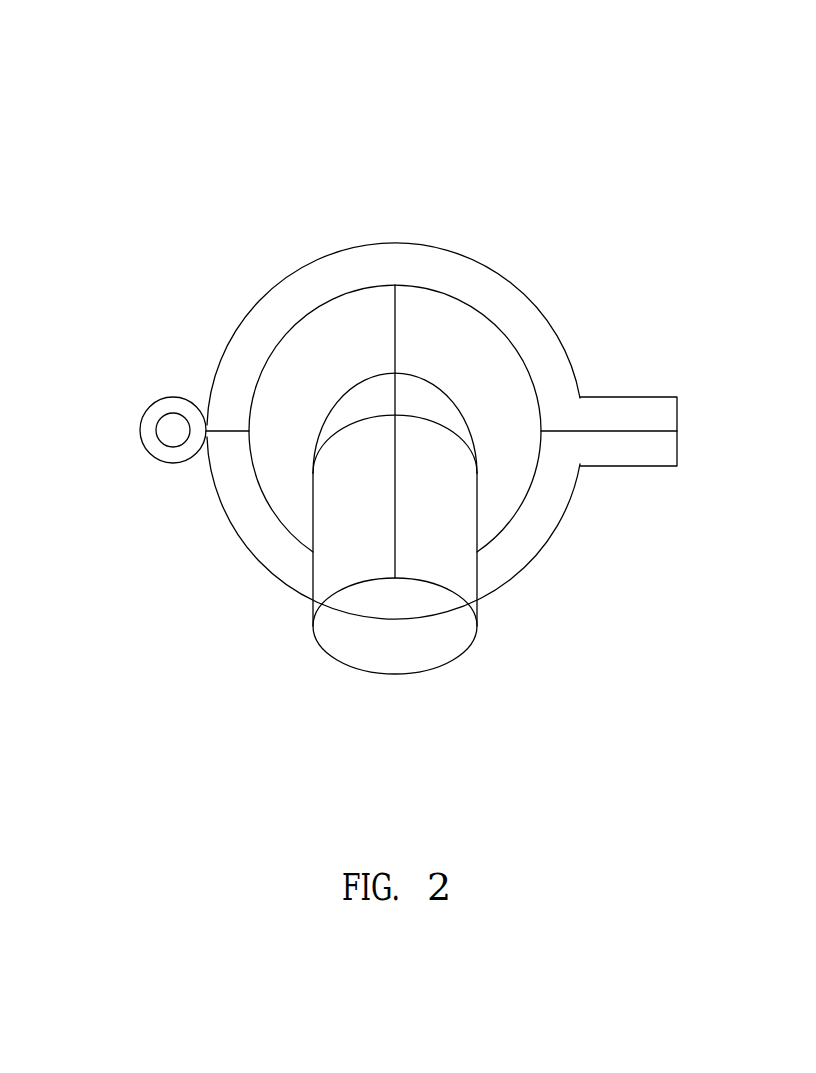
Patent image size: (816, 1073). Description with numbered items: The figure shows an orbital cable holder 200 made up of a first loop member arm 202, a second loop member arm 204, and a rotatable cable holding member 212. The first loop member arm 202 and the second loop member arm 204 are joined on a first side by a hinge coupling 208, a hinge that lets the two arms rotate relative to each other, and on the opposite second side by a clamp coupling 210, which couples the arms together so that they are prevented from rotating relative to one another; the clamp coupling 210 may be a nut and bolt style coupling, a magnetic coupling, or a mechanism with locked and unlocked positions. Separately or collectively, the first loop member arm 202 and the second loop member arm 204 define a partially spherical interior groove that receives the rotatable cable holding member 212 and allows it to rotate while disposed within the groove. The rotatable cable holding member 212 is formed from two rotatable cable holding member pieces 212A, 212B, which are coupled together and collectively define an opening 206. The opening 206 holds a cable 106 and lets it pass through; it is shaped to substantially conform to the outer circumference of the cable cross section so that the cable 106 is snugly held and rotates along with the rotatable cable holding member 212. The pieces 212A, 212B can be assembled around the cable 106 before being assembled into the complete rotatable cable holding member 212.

The orbital cable holder 200 is at (178, 78).
The first loop member arm 202 is at (497, 283).
The second loop member arm 204 is at (510, 553).
The opening 206 is at (353, 387).
The hinge coupling 208 is at (172, 433).
The clamp coupling 210 is at (615, 410).
The rotatable cable holding member 212 is at (303, 360).
The rotatable cable holding member piece 212A is at (370, 317).
The rotatable cable holding member piece 212B is at (447, 322).
The cable 106 is at (358, 647).